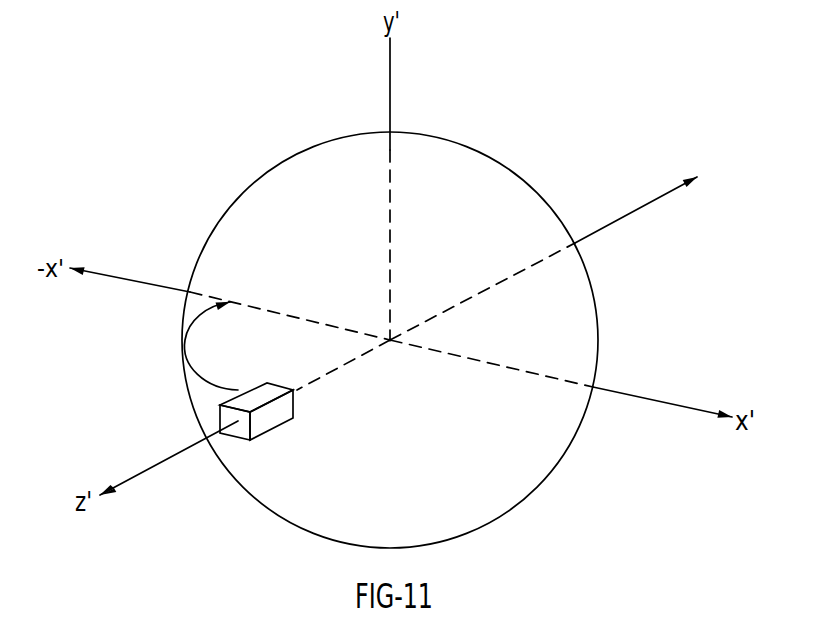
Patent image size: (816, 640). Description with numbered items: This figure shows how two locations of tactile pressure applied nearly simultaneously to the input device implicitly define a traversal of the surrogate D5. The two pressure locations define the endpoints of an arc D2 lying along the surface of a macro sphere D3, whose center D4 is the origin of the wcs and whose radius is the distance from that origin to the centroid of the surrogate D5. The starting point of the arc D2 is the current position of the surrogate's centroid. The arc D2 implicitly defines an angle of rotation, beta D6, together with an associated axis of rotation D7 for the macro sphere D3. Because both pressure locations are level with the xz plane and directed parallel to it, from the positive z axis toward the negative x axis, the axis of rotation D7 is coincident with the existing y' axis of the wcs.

The arc D2 is at (203, 378).
The macro sphere D3 is at (487, 153).
The center of the macro sphere D4 is at (390, 342).
The surrogate D5 is at (275, 417).
The angle of rotation beta D6 is at (290, 349).
The axis of rotation D7 is at (390, 100).